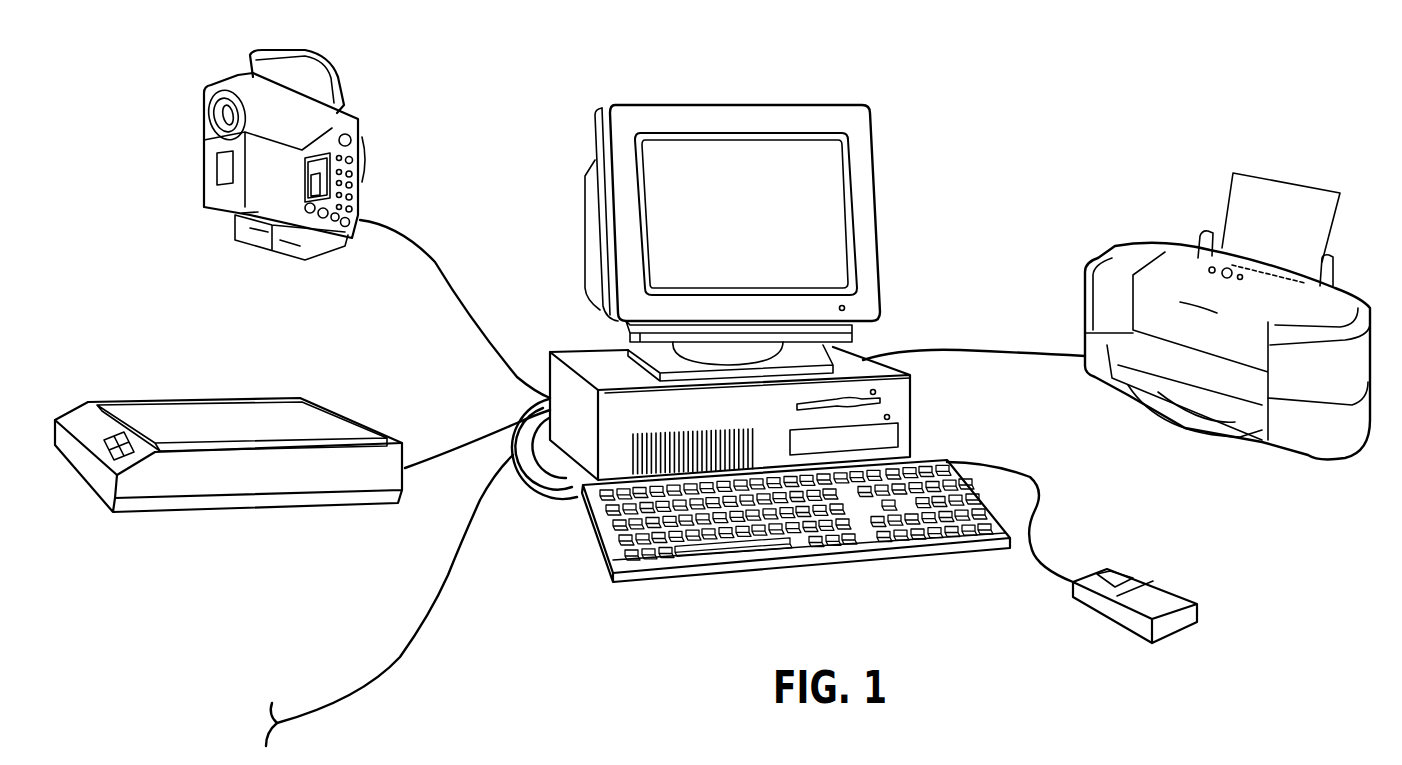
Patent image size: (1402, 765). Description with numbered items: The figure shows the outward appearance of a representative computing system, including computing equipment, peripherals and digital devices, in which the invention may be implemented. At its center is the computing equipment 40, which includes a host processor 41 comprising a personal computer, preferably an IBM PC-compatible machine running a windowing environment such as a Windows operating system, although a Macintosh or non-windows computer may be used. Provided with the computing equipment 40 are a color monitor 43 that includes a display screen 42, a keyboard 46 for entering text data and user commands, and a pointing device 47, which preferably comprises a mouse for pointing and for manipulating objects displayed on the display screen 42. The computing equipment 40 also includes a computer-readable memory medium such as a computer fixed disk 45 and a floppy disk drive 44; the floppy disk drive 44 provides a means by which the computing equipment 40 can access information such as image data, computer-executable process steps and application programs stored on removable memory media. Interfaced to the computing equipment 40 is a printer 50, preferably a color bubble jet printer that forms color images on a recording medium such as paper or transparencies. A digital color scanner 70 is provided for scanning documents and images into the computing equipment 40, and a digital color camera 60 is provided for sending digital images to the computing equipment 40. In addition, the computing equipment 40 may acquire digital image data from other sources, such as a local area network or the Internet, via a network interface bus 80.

The computing equipment 40 is at (920, 97).
The host processor 41 is at (562, 352).
The display screen 42 is at (830, 238).
The color monitor 43 is at (708, 105).
The floppy disk drive 44 is at (880, 400).
The computer fixed disk 45 is at (890, 437).
The keyboard 46 is at (680, 555).
The pointing device 47 is at (1177, 637).
The printer 50 is at (1077, 177).
The digital color camera 60 is at (360, 127).
The digital color scanner 70 is at (285, 503).
The network interface bus 80 is at (340, 750).